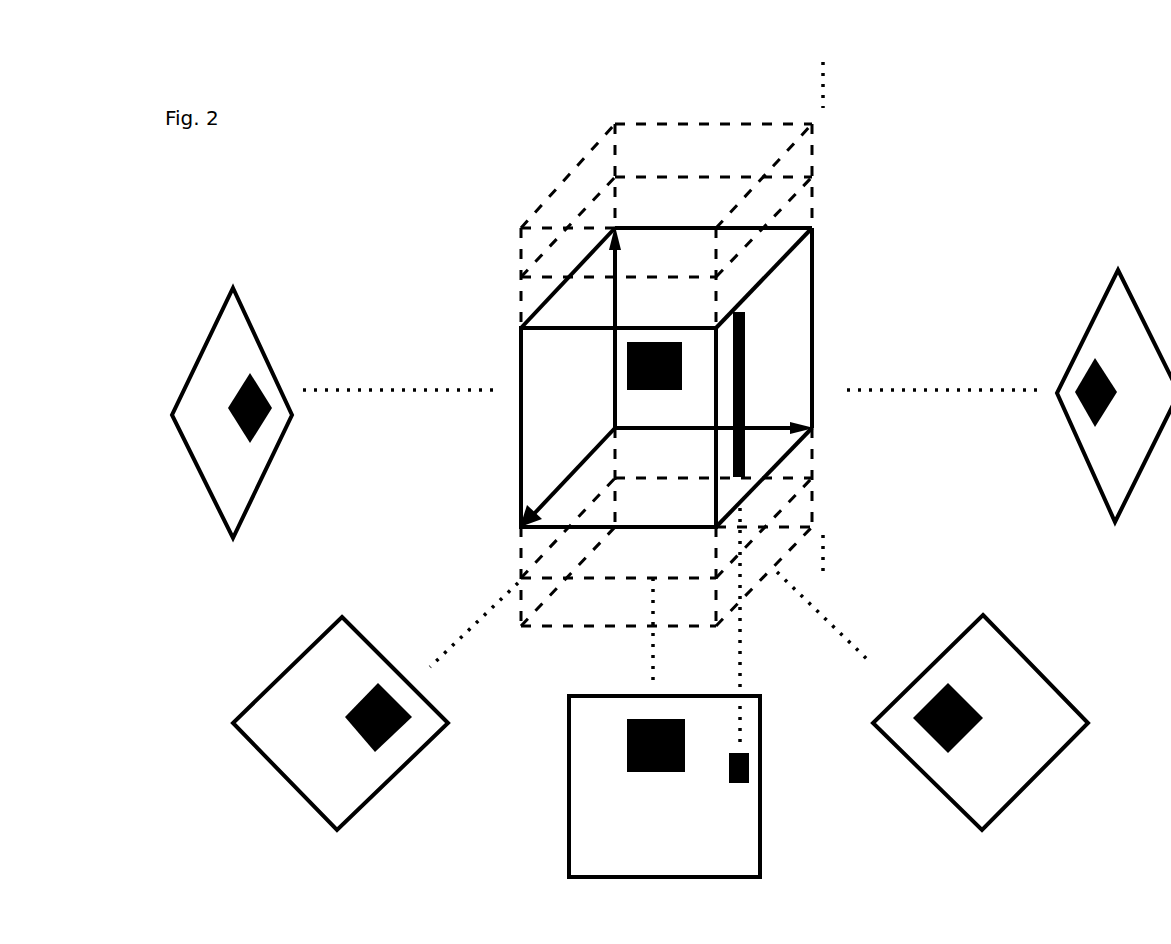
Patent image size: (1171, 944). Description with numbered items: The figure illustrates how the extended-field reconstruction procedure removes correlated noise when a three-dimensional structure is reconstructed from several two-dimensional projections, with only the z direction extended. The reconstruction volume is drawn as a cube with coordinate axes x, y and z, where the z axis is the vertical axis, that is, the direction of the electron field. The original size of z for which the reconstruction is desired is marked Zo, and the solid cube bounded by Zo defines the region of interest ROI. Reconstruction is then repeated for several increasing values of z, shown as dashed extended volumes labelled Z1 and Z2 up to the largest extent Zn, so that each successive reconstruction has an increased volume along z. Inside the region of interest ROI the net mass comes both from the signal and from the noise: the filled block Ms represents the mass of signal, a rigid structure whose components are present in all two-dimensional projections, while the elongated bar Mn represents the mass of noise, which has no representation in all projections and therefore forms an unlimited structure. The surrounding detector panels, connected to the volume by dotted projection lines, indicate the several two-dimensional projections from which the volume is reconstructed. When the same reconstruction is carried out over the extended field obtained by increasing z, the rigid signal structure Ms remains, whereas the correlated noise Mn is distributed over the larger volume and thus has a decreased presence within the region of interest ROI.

The region of interest ROI is at (689, 377).
The mass of signal Ms is at (654, 366).
The mass of noise Mn is at (758, 528).
The size of z for desired reconstruction Zo is at (831, 251).
The first extended z value Z1 is at (682, 410).
The second extended z value Z2 is at (682, 360).
The n-th extended z value Zn is at (676, 176).
The x-axis x is at (714, 416).
The y-axis y is at (567, 477).
The z-axis z is at (627, 327).